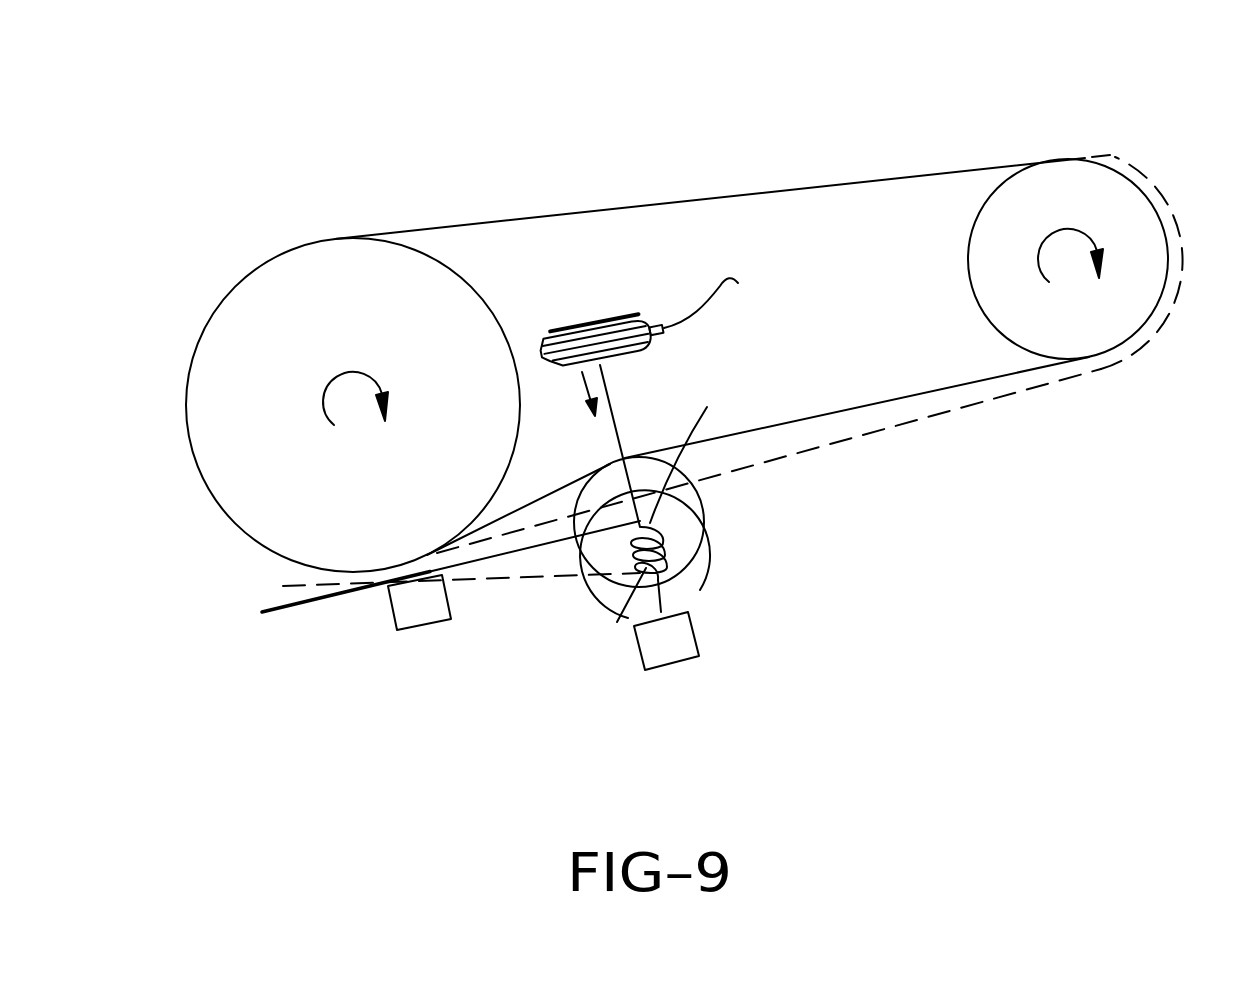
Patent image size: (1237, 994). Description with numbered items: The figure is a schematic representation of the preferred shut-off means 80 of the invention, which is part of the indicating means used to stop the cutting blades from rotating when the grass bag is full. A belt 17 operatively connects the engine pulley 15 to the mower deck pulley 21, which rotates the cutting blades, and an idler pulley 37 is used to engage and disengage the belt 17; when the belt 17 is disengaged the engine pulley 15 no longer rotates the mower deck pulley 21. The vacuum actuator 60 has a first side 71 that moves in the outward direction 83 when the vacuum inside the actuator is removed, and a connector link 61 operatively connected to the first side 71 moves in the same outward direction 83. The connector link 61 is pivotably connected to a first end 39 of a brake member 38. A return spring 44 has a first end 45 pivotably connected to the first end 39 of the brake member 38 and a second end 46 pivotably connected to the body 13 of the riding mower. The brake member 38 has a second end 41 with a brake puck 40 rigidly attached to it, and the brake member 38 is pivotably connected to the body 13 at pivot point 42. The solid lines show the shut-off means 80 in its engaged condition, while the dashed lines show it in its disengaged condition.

The shut-off means 80 is at (800, 136).
The belt 17 is at (522, 215).
The mower deck pulley 21 is at (262, 515).
The engine pulley 15 is at (1123, 305).
The pivot point 42 is at (673, 486).
The vacuum actuator 60 is at (600, 323).
The first side 71 is at (630, 352).
The outward direction 83 is at (585, 376).
The connector link 61 is at (615, 413).
The first end of the brake member 39 is at (697, 458).
The idler pulley 37 is at (685, 493).
The first end of the return spring 45 is at (640, 521).
The second end of the brake member 41 is at (350, 593).
The brake member 38 is at (553, 542).
The return spring 44 is at (614, 604).
The second end of the return spring 46 is at (655, 624).
The body 13 is at (642, 660).
The brake puck 40 is at (384, 582).